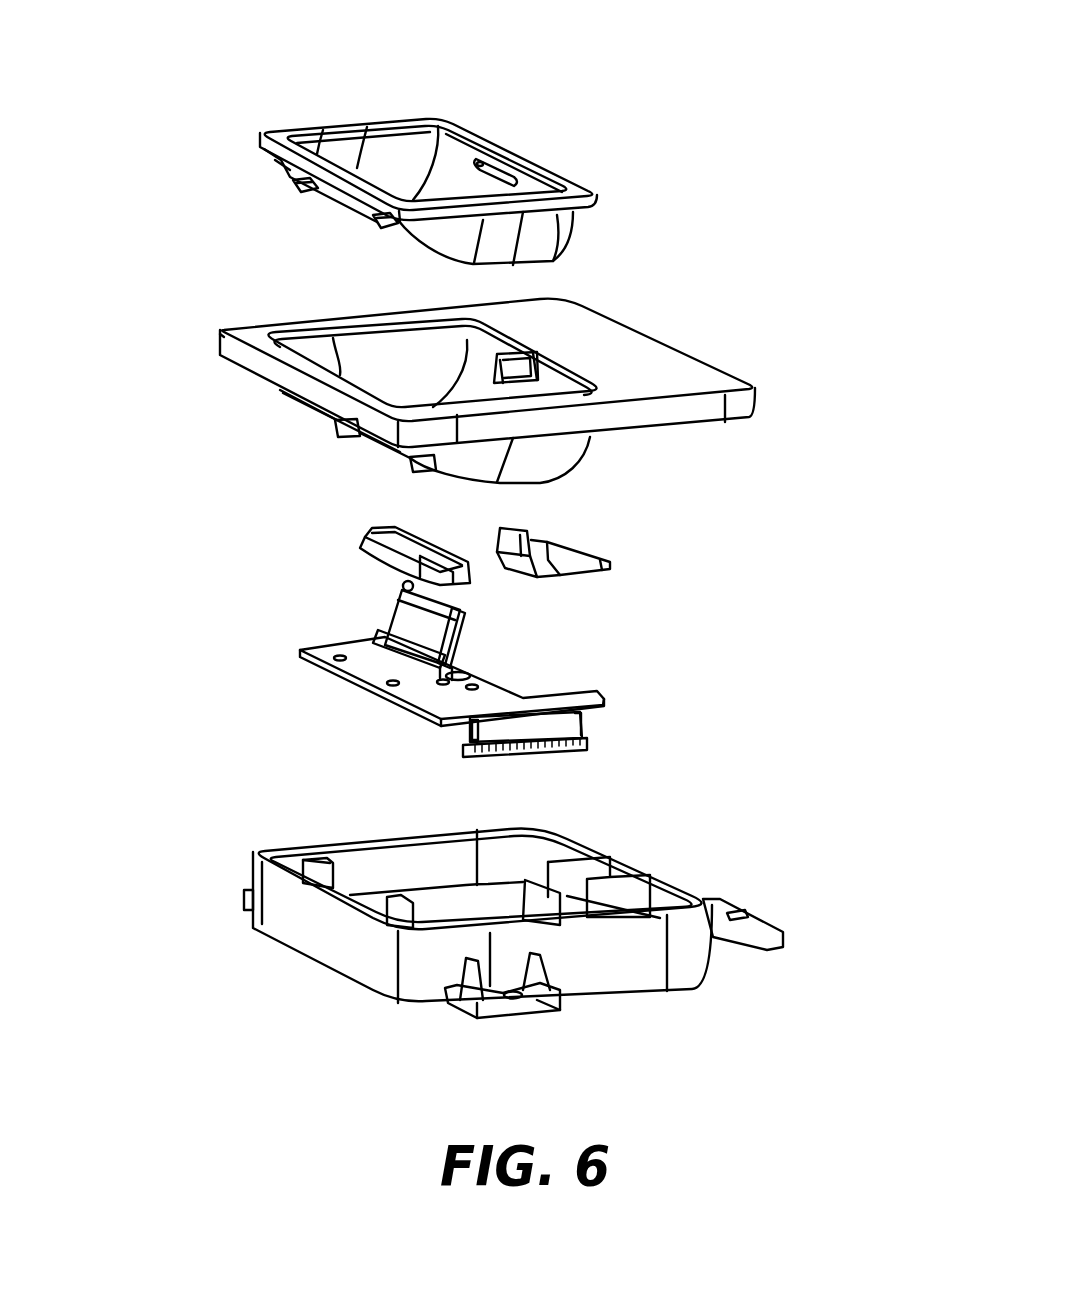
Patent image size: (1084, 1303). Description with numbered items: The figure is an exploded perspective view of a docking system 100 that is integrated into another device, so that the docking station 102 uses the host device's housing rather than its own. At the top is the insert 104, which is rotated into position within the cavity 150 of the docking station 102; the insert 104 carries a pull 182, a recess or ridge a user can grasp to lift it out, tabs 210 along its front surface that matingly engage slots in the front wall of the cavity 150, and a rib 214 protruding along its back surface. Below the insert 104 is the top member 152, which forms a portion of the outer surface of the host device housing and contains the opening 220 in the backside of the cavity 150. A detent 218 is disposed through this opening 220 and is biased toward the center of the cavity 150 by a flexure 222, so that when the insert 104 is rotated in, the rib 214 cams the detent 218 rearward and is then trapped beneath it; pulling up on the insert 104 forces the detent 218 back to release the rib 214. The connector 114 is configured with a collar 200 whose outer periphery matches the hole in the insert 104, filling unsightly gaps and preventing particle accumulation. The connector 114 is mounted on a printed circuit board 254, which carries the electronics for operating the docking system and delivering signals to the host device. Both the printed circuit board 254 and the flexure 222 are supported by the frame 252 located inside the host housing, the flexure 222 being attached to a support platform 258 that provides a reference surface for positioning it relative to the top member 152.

The docking system 100 is at (702, 86).
The docking station 102 is at (758, 496).
The insert 104 is at (445, 117).
The connector 114 is at (464, 616).
The cavity 150 is at (322, 340).
The top member 152 is at (218, 342).
The pull 182 is at (498, 161).
The collar 200 is at (367, 542).
The tabs 210 is at (288, 182).
The rib 214 is at (580, 157).
The detent 218 is at (500, 540).
The opening 220 is at (533, 373).
The flexure 222 is at (533, 530).
The frame 252 is at (663, 995).
The printed circuit board 254 is at (332, 643).
The support platform 258 is at (573, 875).